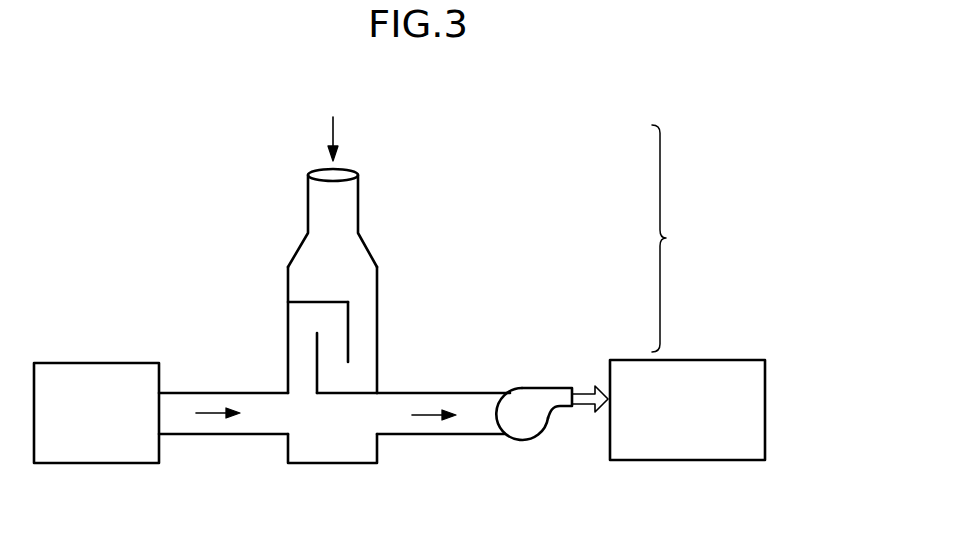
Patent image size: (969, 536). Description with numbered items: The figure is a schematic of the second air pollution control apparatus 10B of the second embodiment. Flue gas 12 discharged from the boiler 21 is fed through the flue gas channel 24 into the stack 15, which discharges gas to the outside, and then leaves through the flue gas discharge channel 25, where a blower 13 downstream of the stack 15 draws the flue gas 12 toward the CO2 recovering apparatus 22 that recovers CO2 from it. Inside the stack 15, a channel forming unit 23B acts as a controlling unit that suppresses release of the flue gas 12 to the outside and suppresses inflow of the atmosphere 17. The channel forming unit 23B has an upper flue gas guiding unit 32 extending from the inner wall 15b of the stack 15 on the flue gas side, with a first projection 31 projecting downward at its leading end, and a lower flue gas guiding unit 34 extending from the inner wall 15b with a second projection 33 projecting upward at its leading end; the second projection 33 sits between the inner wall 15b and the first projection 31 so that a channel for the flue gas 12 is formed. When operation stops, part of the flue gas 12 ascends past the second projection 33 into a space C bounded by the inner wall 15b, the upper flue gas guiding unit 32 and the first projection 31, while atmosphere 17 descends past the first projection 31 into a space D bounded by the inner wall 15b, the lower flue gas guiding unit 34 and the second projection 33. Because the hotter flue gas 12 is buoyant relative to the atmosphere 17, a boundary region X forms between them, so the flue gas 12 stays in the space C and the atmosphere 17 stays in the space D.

The second air pollution control apparatus 10B is at (196, 146).
The flue gas 12 is at (217, 410).
The blower 13 is at (527, 440).
The stack 15 is at (308, 203).
The inner wall 15b is at (287, 275).
The atmosphere 17 is at (343, 135).
The boiler 21 is at (95, 362).
The CO2 recovering apparatus 22 is at (697, 358).
The channel forming unit 23B is at (737, 238).
The flue gas channel 24 is at (222, 435).
The flue gas discharge channel 25 is at (490, 437).
The first projection 31 is at (349, 322).
The upper flue gas guiding unit 32 is at (325, 302).
The second projection 33 is at (318, 343).
The lower flue gas guiding unit 34 is at (350, 391).
The space C is at (300, 317).
The boundary region X is at (333, 353).
The space D is at (325, 382).